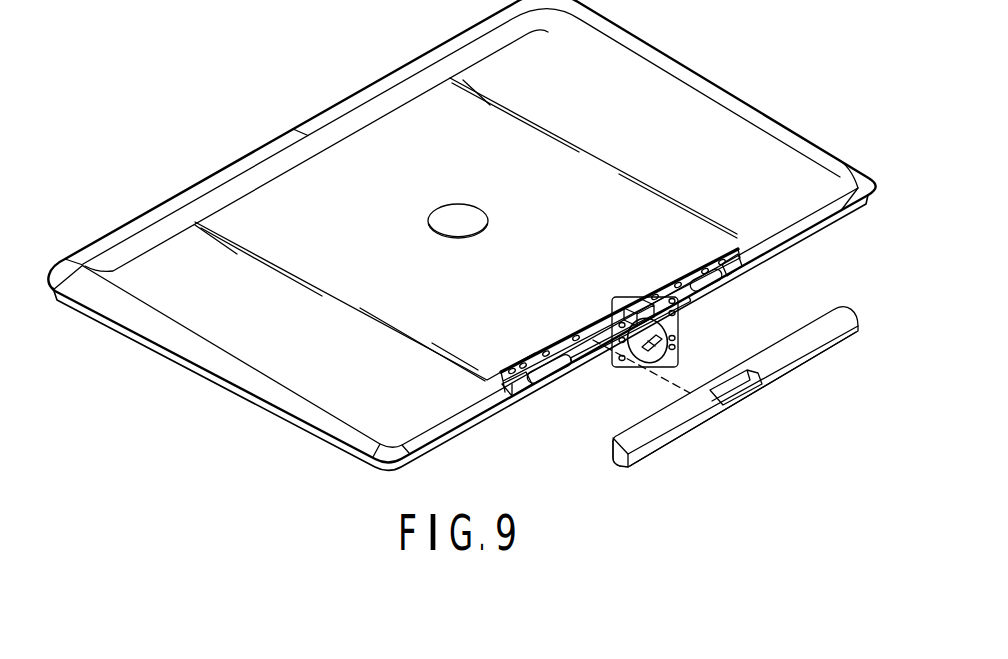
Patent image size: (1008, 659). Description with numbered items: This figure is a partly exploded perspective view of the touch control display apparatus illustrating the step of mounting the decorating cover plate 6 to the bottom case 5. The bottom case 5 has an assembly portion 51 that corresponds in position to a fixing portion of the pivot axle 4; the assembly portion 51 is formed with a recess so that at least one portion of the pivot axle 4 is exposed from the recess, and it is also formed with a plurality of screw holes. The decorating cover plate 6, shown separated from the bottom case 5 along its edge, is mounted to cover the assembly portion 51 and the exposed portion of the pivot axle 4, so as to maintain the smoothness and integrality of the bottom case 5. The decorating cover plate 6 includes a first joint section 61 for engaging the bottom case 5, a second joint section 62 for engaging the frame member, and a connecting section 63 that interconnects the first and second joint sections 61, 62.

The pivot axle 4 is at (687, 294).
The bottom case 5 is at (667, 107).
The assembly portion 51 is at (725, 277).
The decorating cover plate 6 is at (700, 401).
The first joint section 61 is at (637, 435).
The second joint section 62 is at (620, 460).
The connecting section 63 is at (660, 448).